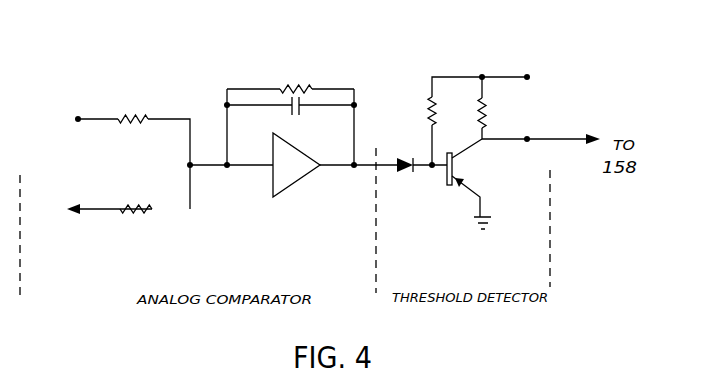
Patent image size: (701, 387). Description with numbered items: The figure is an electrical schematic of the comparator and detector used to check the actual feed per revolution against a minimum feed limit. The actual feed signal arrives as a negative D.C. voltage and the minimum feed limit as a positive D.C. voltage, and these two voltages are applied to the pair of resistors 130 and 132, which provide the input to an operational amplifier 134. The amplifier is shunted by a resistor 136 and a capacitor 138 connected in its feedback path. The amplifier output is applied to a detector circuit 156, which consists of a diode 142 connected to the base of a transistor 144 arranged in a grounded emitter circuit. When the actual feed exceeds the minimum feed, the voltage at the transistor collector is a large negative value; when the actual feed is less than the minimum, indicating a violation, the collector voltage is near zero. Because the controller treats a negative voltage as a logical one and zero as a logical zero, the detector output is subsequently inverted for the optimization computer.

The resistor 130 is at (125, 113).
The resistor 132 is at (134, 212).
The operational amplifier 134 is at (286, 188).
The resistor 136 is at (285, 87).
The capacitor 138 is at (301, 112).
The diode 142 is at (409, 172).
The transistor 144 is at (470, 149).
The detector circuit 156 is at (498, 72).